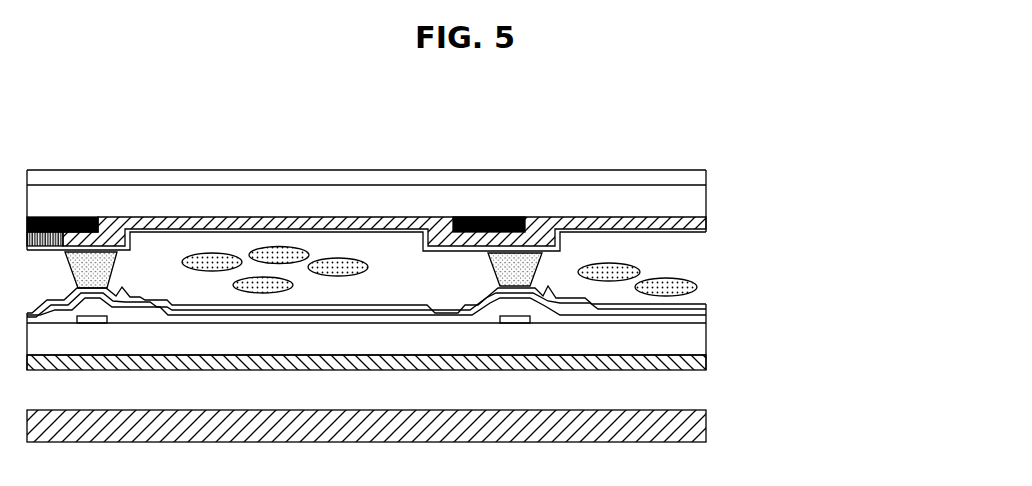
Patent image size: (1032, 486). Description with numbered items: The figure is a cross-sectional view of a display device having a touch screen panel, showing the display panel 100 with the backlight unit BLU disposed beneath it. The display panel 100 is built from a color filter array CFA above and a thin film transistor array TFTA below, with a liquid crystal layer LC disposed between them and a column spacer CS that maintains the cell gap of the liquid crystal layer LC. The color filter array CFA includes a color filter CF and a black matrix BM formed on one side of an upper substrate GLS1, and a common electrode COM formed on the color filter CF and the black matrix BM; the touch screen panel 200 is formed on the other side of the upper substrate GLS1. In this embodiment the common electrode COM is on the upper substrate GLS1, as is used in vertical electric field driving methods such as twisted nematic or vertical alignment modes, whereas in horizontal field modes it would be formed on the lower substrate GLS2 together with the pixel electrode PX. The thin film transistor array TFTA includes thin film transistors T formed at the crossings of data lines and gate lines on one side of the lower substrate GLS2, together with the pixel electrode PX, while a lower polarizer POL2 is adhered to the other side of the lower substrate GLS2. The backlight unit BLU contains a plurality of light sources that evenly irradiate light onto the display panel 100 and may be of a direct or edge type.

The display panel 100 is at (855, 378).
The touch screen panel 200 is at (706, 177).
The upper substrate GLS1 is at (706, 200).
The black matrix BM is at (498, 217).
The color filter CF is at (540, 217).
The common electrode COM is at (706, 228).
The column spacer CS is at (535, 265).
The liquid crystal layer LC is at (703, 273).
The thin film transistor T is at (76, 285).
The pixel electrode PX is at (706, 307).
The lower substrate GLS2 is at (700, 337).
The lower polarizer POL2 is at (706, 362).
The backlight unit BLU is at (706, 428).
The color filter array CFA is at (793, 188).
The thin film transistor array TFTA is at (793, 300).